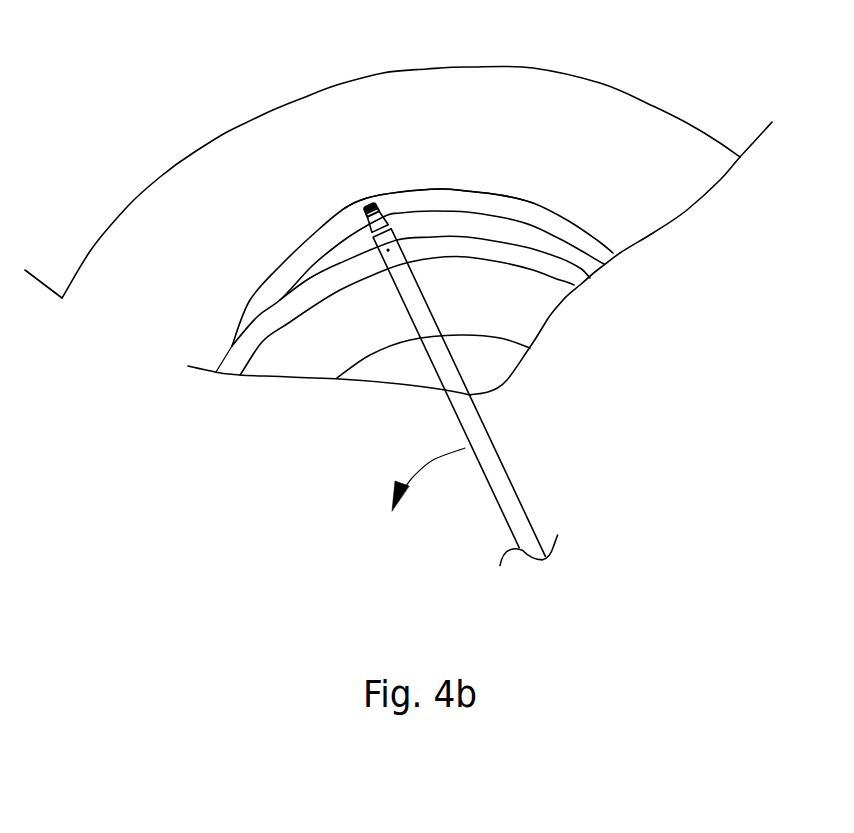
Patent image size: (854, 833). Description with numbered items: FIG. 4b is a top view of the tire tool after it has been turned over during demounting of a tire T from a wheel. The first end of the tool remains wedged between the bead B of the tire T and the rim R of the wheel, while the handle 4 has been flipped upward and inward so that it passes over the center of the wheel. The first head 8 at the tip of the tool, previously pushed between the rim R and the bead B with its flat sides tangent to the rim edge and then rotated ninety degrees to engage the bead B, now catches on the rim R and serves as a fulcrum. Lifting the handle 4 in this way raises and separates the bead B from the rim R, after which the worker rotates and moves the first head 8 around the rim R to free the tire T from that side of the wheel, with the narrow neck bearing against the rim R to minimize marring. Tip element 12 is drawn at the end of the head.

The tire T is at (261, 172).
The bead B is at (440, 203).
The rim R is at (498, 252).
The handle 4 is at (510, 497).
The first head 8 is at (363, 221).
The tip 12 is at (370, 205).